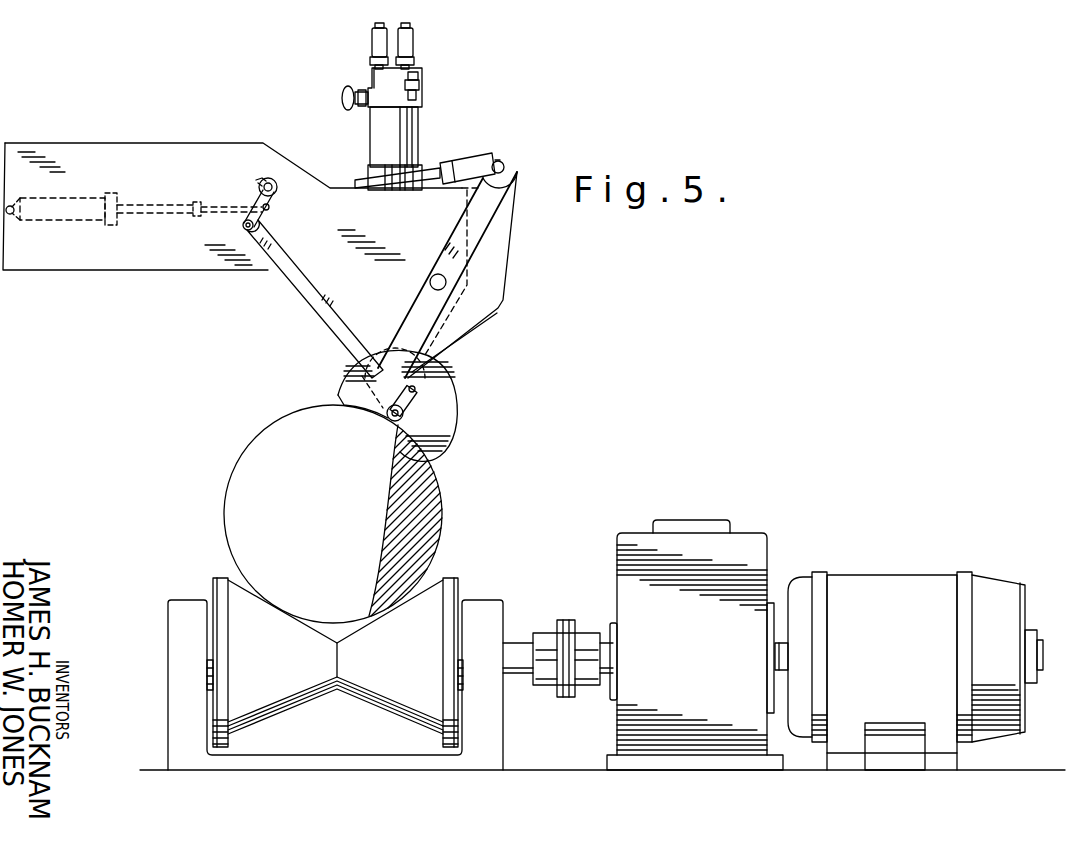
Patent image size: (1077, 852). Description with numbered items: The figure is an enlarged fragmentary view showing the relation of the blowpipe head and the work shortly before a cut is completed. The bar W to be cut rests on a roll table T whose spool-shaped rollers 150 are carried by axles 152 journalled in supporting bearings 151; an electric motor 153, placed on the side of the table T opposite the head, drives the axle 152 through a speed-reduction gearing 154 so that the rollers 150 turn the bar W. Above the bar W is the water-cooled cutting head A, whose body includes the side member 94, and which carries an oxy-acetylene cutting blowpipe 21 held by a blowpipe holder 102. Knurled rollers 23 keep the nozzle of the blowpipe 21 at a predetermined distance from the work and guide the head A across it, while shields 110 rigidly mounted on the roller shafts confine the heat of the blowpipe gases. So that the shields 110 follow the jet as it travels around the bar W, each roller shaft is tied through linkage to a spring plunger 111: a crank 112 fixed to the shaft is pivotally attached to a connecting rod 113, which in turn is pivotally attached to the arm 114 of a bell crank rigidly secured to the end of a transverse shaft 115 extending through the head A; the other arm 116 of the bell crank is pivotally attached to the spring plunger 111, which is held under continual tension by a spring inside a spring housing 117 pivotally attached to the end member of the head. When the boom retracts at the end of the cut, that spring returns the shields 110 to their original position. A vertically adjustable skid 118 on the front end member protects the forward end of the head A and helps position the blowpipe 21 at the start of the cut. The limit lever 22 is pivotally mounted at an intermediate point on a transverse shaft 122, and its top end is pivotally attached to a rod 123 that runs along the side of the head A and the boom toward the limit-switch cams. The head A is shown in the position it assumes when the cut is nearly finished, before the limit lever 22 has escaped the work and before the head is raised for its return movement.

The oxy-acetylene cutting blowpipe 21 is at (415, 122).
The limit lever 22 is at (493, 207).
The rollers 23 is at (405, 425).
The side member 94 is at (63, 262).
The blowpipe holder 102 is at (368, 172).
The shields 110 is at (444, 379).
The spring plunger 111 is at (133, 212).
The crank 112 is at (441, 402).
The connecting rod 113 is at (287, 268).
The arm of bell crank 114 is at (255, 202).
The transverse shaft 115 is at (276, 192).
The other arm of bell crank 116 is at (262, 225).
The spring housing 117 is at (32, 218).
The skid 118 is at (478, 330).
The transverse shaft 122 is at (430, 282).
The rod 123 is at (426, 176).
The spool-shaped rollers 150 is at (448, 580).
The supporting bearings 151 is at (178, 610).
The axle 152 is at (514, 680).
The electric motor 153 is at (870, 583).
The speed-reduction gearing 154 is at (732, 540).
The bar W is at (244, 448).
The roll table T is at (163, 626).
The cutting head A is at (207, 282).